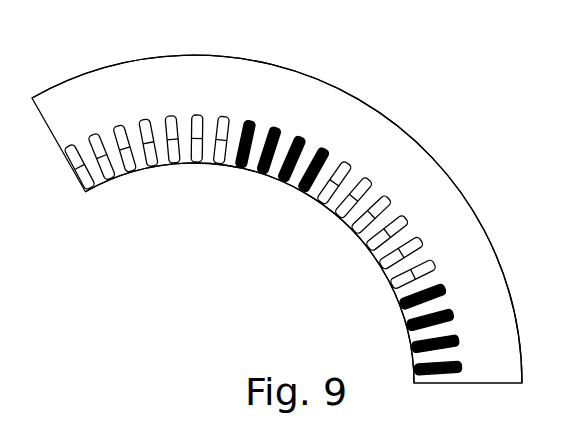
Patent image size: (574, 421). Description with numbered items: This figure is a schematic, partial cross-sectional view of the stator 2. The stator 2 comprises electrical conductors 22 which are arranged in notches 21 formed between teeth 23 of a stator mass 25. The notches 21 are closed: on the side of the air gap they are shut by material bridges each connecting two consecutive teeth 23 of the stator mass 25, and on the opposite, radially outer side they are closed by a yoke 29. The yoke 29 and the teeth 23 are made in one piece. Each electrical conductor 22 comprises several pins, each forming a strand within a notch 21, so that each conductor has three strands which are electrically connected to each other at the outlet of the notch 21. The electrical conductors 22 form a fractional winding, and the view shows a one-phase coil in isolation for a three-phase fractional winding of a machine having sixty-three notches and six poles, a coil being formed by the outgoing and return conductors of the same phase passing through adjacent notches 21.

The stator 2 is at (419, 104).
The notches 21 is at (97, 177).
The electrical conductors 22 is at (338, 163).
The teeth 23 is at (145, 168).
The stator mass 25 is at (434, 150).
The yoke 29 is at (314, 104).